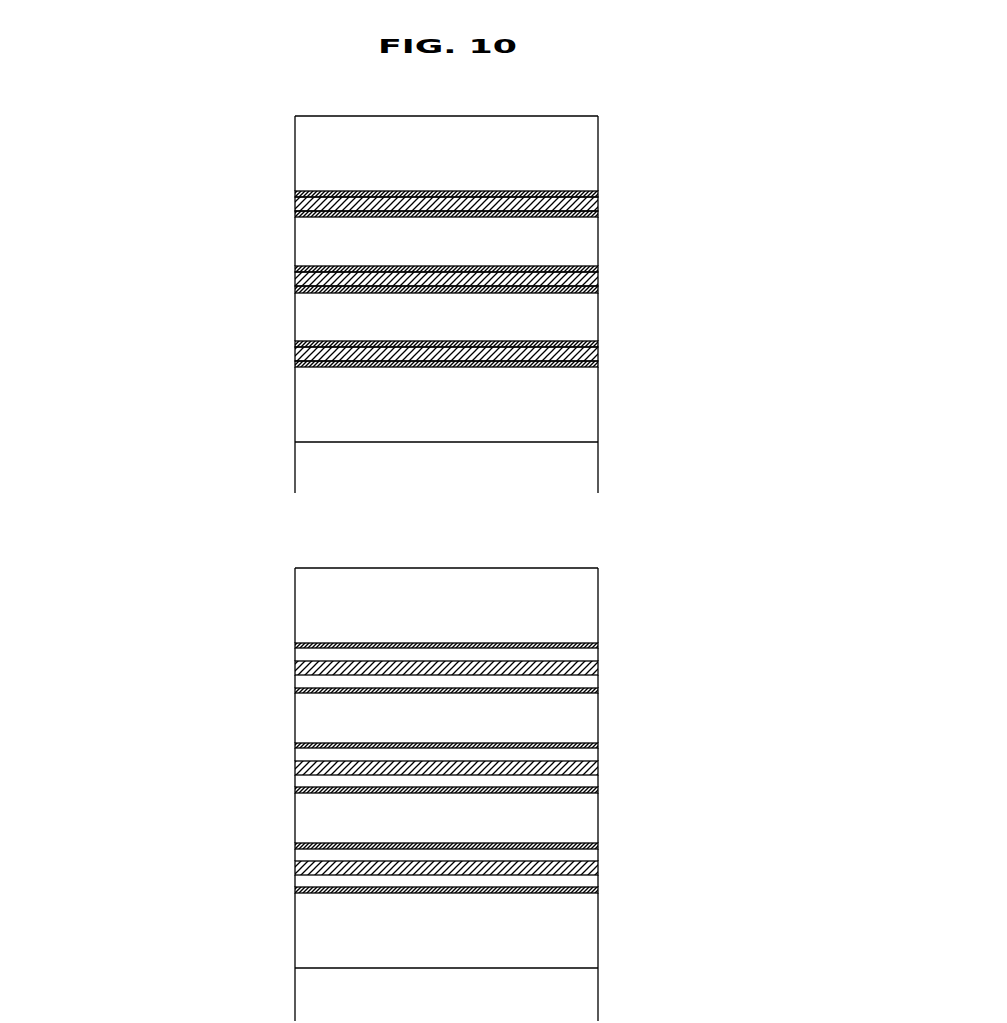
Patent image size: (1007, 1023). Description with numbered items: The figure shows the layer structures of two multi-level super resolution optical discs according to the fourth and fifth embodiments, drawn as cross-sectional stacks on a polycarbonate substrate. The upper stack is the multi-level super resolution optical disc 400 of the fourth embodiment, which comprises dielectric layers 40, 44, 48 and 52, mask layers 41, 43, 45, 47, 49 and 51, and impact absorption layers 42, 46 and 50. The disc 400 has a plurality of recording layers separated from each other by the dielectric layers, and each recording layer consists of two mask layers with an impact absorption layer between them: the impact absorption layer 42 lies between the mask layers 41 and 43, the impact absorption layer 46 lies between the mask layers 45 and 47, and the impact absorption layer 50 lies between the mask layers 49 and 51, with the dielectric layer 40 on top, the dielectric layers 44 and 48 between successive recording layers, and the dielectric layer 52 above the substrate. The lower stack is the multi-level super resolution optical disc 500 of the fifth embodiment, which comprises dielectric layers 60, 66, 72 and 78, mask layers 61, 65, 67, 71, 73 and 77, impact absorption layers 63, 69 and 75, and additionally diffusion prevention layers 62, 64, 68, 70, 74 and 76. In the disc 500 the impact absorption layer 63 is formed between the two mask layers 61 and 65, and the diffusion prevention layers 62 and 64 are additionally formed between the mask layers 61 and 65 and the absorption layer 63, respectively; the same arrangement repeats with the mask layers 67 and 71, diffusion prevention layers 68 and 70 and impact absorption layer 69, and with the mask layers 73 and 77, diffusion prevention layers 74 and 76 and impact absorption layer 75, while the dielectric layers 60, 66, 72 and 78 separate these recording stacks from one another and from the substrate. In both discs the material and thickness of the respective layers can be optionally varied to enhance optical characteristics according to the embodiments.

The multi-level super resolution optical disc 400 is at (355, 102).
The dielectric layer 40 is at (320, 155).
The mask layer 41 is at (583, 192).
The impact absorption layer 42 is at (598, 204).
The mask layer 43 is at (583, 216).
The dielectric layer 44 is at (320, 242).
The mask layer 45 is at (583, 267).
The impact absorption layer 46 is at (598, 279).
The mask layer 47 is at (583, 292).
The dielectric layer 48 is at (320, 318).
The mask layer 49 is at (583, 342).
The impact absorption layer 50 is at (598, 354).
The mask layer 51 is at (583, 366).
The dielectric layer 52 is at (320, 404).
The multi-level super resolution optical disc 500 is at (355, 553).
The dielectric layer 60 is at (320, 605).
The mask layer 61 is at (598, 646).
The diffusion prevention layer 62 is at (320, 655).
The impact absorption layer 63 is at (598, 668).
The diffusion prevention layer 64 is at (320, 681).
The mask layer 65 is at (598, 690).
The dielectric layer 66 is at (320, 717).
The mask layer 67 is at (598, 745).
The diffusion prevention layer 68 is at (320, 756).
The impact absorption layer 69 is at (598, 768).
The diffusion prevention layer 70 is at (320, 782).
The mask layer 71 is at (598, 790).
The dielectric layer 72 is at (320, 817).
The mask layer 73 is at (598, 846).
The diffusion prevention layer 74 is at (320, 855).
The impact absorption layer 75 is at (598, 868).
The diffusion prevention layer 76 is at (320, 881).
The mask layer 77 is at (598, 890).
The dielectric layer 78 is at (320, 930).